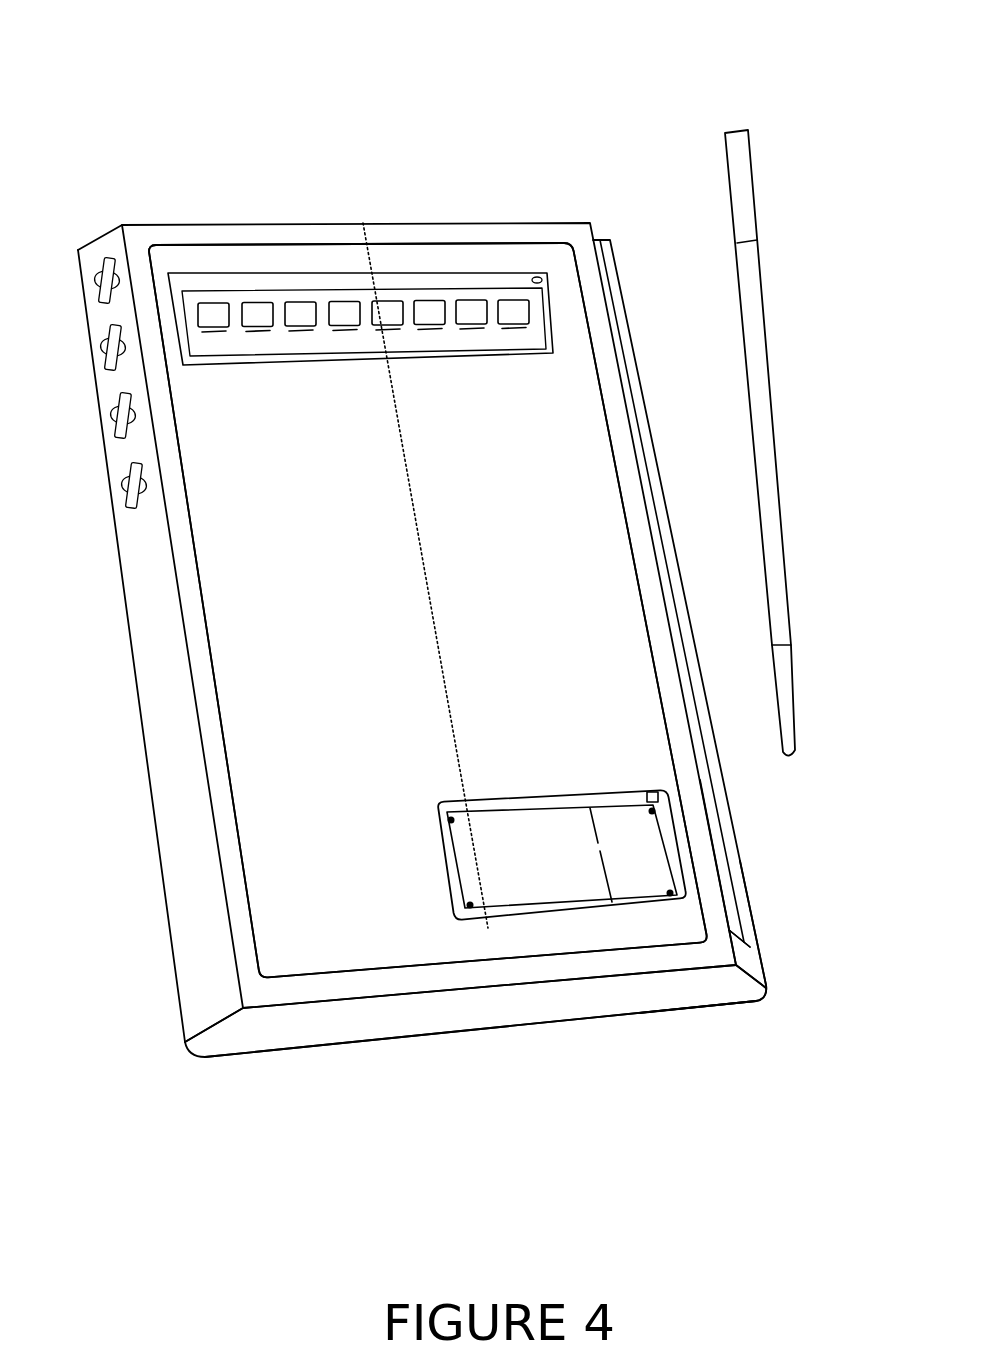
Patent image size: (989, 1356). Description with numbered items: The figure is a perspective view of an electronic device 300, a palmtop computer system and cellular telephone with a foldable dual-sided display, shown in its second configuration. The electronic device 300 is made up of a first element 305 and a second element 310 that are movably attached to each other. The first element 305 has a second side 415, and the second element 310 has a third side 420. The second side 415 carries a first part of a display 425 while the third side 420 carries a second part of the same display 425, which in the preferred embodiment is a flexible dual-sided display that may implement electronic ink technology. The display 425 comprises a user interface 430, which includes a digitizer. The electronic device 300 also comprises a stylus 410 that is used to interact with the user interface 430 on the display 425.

The electronic device 300 is at (44, 35).
The first element 305 is at (360, 1018).
The second element 310 is at (688, 990).
The stylus 410 is at (772, 412).
The second side 415 is at (287, 982).
The third side 420 is at (703, 952).
The display 425 is at (260, 743).
The user interface 430 is at (643, 868).